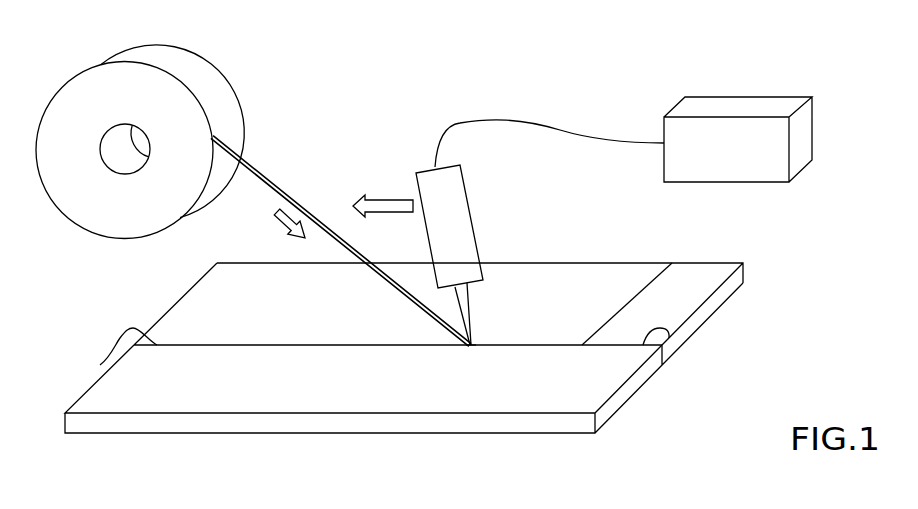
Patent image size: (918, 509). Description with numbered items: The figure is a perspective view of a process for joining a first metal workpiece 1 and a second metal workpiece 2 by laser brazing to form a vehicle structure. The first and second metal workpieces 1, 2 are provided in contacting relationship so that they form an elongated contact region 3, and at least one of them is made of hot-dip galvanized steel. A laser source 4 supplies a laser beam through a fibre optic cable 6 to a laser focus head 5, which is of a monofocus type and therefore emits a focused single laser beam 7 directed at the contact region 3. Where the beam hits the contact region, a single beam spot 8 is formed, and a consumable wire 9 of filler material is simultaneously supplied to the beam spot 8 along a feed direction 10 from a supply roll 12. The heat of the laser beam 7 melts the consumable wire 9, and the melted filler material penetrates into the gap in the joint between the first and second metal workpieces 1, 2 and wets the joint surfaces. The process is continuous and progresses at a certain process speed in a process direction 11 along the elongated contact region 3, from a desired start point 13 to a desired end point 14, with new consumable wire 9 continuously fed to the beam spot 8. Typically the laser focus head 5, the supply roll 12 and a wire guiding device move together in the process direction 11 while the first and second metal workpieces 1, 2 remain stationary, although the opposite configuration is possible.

The first metal workpiece 1 is at (672, 297).
The second metal workpiece 2 is at (582, 380).
The elongated contact region 3 is at (672, 263).
The laser source 4 is at (712, 132).
The laser focus head 5 is at (430, 197).
The fibre optic cable 6 is at (558, 127).
The focused single laser beam 7 is at (468, 300).
The beam spot 8 is at (470, 348).
The consumable wire 9 is at (240, 170).
The feed direction 10 is at (291, 215).
The process direction 11 is at (388, 205).
The supply roll 12 is at (73, 95).
The start point 13 is at (675, 332).
The end point 14 is at (100, 365).